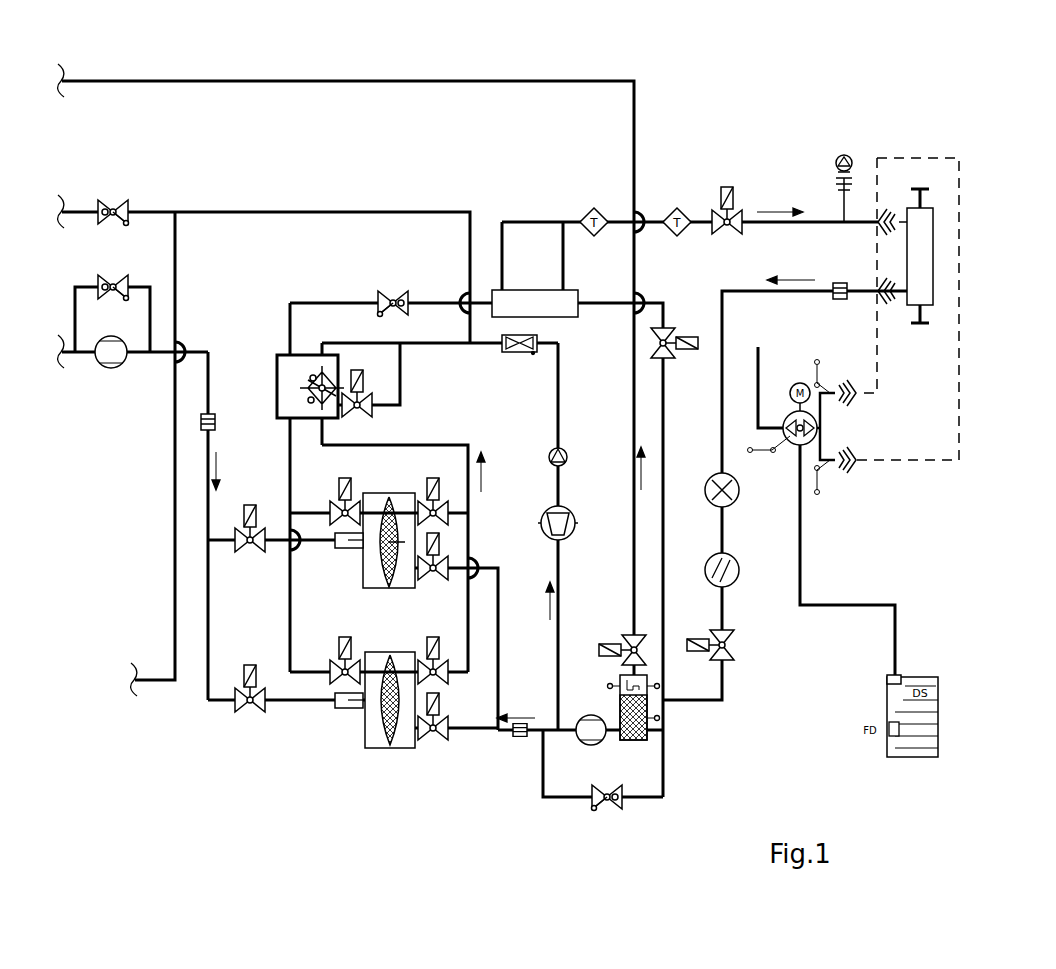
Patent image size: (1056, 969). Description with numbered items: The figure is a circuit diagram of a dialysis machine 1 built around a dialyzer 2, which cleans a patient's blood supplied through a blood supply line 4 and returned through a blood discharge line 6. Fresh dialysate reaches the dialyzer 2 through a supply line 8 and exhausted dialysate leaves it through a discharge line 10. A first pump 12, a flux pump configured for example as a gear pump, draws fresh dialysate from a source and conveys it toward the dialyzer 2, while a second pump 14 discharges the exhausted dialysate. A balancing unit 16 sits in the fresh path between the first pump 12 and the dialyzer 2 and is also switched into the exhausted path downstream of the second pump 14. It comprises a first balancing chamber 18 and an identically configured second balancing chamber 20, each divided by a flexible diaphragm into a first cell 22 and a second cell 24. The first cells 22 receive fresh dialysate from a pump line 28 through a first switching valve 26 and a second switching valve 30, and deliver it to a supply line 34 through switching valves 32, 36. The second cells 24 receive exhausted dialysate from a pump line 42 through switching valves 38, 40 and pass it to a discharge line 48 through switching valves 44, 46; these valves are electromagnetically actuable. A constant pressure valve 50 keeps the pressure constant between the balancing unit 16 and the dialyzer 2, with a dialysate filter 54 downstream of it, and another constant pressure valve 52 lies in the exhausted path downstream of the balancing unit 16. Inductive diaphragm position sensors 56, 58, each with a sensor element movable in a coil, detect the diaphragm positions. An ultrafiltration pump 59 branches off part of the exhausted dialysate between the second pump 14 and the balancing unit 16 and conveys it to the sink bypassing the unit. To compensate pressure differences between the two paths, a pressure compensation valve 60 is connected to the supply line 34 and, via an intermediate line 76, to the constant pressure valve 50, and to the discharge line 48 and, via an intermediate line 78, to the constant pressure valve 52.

The dialysis machine 1 is at (742, 52).
The dialyzer 2 is at (933, 252).
The blood supply line 4 is at (922, 320).
The blood discharge line 6 is at (920, 192).
The supply line 8 is at (812, 220).
The discharge line 10 is at (830, 300).
The first pump 12 is at (111, 371).
The second pump 14 is at (583, 746).
The balancing unit 16 is at (396, 762).
The first balancing chamber 18 is at (363, 741).
The second balancing chamber 20 is at (381, 493).
The first cell 22 is at (378, 562).
The second cell 24 is at (400, 572).
The first switching valve 26 is at (250, 716).
The pump line 28 is at (206, 514).
The second switching valve 30 is at (246, 558).
The switching valve 32 is at (330, 684).
The supply line 34 is at (289, 473).
The switching valve 36 is at (330, 508).
The switching valve 38 is at (440, 740).
The switching valve 40 is at (450, 563).
The pump line 42 is at (539, 726).
The switching valve 44 is at (442, 688).
The switching valve 46 is at (450, 512).
The discharge line 48 is at (456, 446).
The constant pressure valve 50 is at (392, 290).
The constant pressure valve 52 is at (122, 203).
The dialysate filter 54 is at (530, 290).
The inductive diaphragm position sensor 56 is at (345, 710).
The inductive diaphragm position sensor 58 is at (345, 549).
The ultrafiltration pump 59 is at (571, 532).
The pressure compensation valve 60 is at (277, 380).
The intermediate line 76 is at (297, 302).
The intermediate line 78 is at (440, 210).